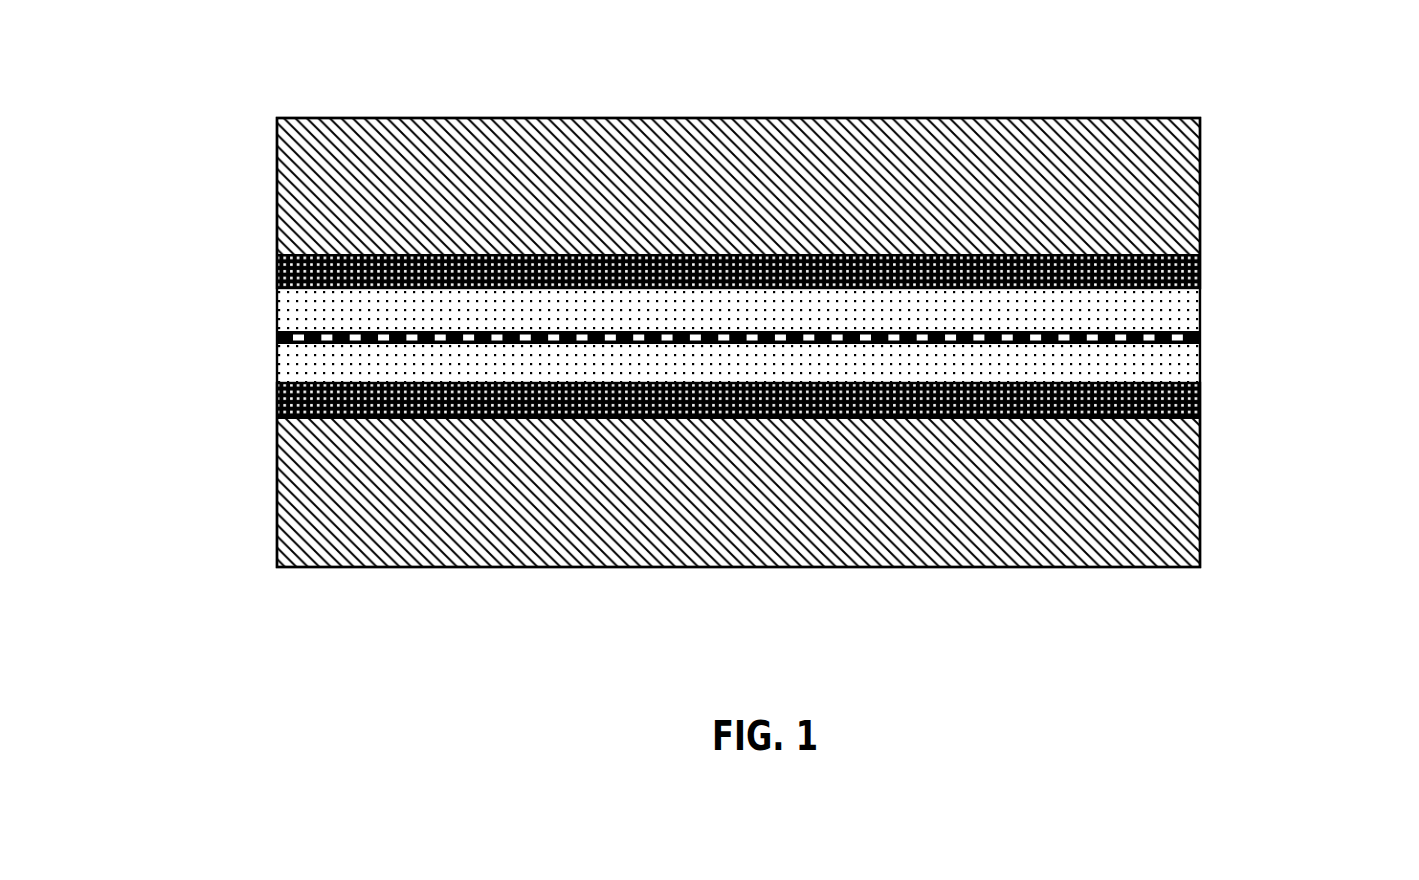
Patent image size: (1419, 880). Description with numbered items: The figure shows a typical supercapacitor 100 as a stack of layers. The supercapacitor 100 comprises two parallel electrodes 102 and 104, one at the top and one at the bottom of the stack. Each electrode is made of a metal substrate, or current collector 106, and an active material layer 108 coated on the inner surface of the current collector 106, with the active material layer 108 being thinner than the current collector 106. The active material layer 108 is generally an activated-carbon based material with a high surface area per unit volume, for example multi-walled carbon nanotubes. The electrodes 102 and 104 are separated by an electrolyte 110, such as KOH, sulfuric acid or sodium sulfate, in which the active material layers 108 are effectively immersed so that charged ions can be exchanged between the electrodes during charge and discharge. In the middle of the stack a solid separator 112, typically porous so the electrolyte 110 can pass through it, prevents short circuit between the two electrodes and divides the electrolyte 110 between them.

The supercapacitor 100 is at (886, 57).
The electrode 102 is at (277, 118).
The electrode 104 is at (277, 397).
The current collector 106 is at (1248, 548).
The active material layer 108 is at (1248, 440).
The electrolyte 110 is at (1200, 258).
The separator 112 is at (278, 336).